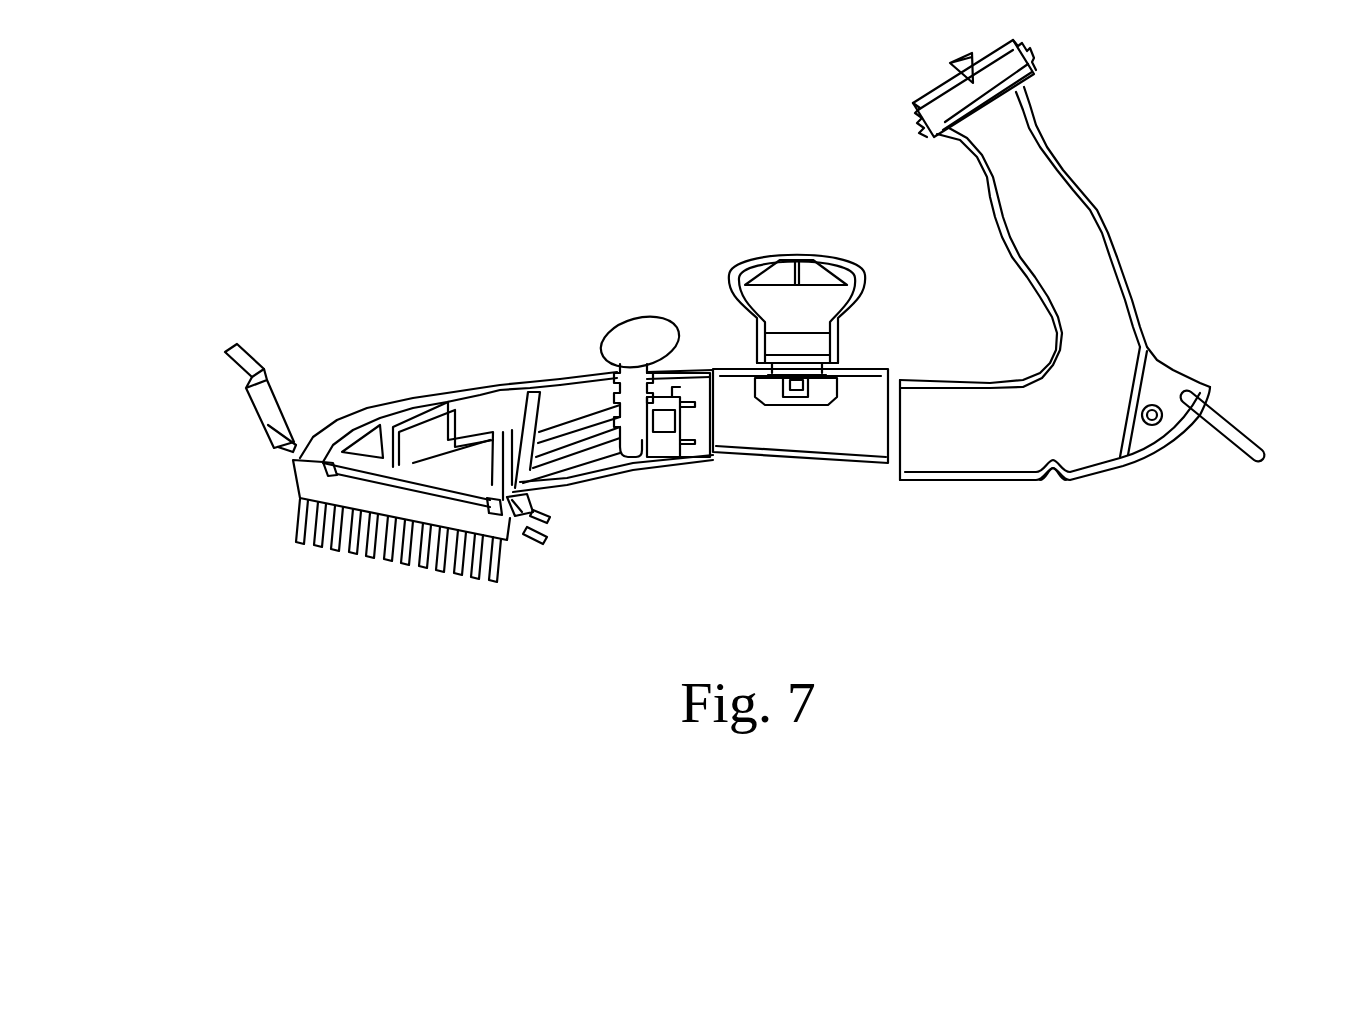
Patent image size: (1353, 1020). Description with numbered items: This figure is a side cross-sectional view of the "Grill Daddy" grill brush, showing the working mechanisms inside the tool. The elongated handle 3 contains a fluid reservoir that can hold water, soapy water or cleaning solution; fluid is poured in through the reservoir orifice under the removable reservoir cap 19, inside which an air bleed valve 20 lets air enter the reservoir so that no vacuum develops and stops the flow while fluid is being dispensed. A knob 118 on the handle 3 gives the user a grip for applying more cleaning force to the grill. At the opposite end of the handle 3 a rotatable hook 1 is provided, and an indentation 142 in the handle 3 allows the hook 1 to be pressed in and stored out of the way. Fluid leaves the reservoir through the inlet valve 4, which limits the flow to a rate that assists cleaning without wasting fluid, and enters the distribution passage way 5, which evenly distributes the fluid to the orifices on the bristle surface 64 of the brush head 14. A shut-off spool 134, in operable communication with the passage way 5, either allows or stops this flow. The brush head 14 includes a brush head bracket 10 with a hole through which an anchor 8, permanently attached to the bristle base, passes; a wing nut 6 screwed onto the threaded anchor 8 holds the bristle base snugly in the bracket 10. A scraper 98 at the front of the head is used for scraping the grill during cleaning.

The hook 1 is at (1248, 437).
The handle 3 is at (972, 433).
The inlet valve 4 is at (657, 440).
The distribution passage way 5 is at (568, 418).
The wing nut 6 is at (540, 520).
The anchor 8 is at (507, 497).
The brush head bracket 10 is at (425, 477).
The brush head 14 is at (300, 483).
The reservoir cap 19 is at (917, 100).
The air bleed valve 20 is at (957, 55).
The bristle surface 64 is at (298, 500).
The scraper 98 is at (262, 430).
The knob 118 is at (790, 256).
The shut-off spool 134 is at (632, 317).
The indentation 142 is at (1053, 477).